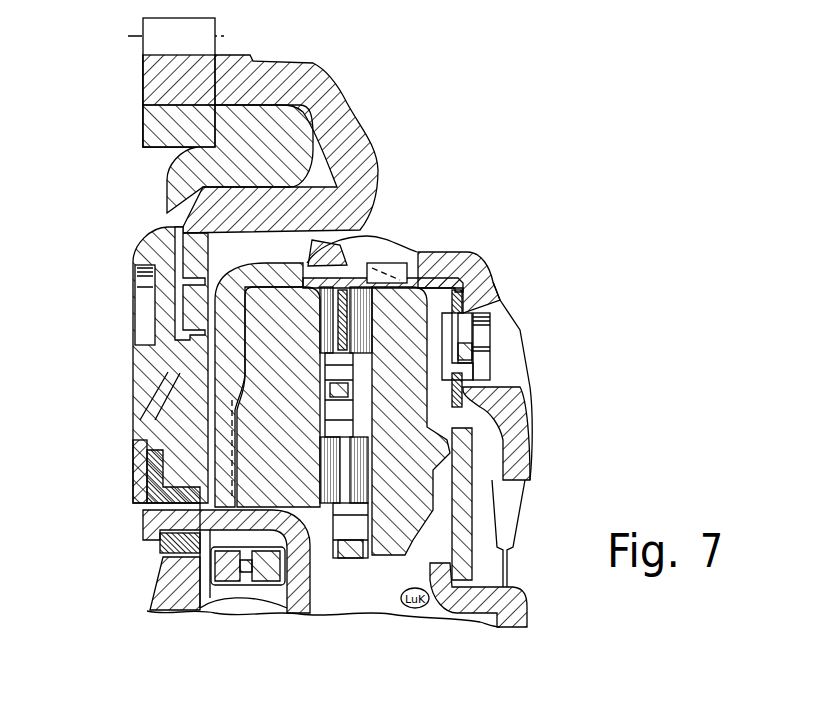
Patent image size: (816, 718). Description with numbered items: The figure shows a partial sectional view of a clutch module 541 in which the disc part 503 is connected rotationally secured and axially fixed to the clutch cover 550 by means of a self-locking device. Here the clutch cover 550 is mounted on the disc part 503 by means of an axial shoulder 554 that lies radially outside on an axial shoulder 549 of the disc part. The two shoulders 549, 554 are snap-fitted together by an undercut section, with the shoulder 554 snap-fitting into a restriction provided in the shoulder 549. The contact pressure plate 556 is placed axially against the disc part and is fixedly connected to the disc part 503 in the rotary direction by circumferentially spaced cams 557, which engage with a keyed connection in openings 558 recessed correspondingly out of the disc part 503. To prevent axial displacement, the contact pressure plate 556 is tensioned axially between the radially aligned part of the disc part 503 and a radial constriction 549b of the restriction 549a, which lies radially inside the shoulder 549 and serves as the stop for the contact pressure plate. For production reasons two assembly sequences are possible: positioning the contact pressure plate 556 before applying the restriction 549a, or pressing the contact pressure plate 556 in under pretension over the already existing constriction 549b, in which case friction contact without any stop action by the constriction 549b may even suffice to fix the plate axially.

The disc part 503 is at (234, 316).
The clutch module 541 is at (610, 258).
The axial shoulder 549 is at (187, 232).
The restriction 549a is at (360, 242).
The radial constriction 549b is at (320, 290).
The clutch cover 550 is at (478, 274).
The axial shoulder 554 is at (457, 257).
The contact pressure plate 556 is at (262, 436).
The cams 557 is at (145, 480).
The openings 558 is at (233, 392).